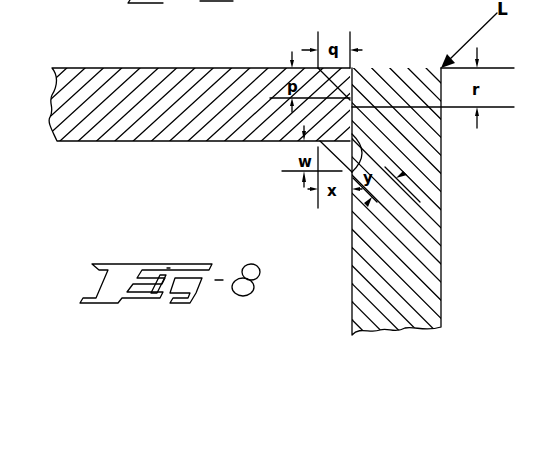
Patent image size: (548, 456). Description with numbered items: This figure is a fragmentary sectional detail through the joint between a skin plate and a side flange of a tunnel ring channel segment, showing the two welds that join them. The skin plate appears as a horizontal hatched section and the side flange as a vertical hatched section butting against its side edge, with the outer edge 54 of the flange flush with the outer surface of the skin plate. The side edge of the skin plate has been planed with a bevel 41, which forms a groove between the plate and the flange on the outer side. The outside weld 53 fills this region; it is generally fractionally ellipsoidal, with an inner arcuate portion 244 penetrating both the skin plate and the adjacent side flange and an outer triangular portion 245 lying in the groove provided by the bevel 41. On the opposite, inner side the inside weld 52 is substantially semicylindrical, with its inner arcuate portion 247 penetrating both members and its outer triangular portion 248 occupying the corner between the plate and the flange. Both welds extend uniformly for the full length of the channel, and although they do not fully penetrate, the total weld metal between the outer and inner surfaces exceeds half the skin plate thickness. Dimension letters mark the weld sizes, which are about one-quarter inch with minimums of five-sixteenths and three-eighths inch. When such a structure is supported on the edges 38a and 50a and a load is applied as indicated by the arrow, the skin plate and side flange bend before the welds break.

The skin plate edge 38a is at (50, 124).
The side flange edge 50a is at (437, 330).
The bevel 41 is at (337, 72).
The outside weld 53 is at (351, 67).
The outer edge of side flange 54 is at (411, 67).
The inside weld 52 is at (352, 146).
The inner arcuate portion of outside weld 244 is at (332, 72).
The outer triangular portion of outside weld 245 is at (331, 68).
The inner arcuate portion of inside weld 247 is at (360, 140).
The outer triangular portion of inside weld 248 is at (332, 128).